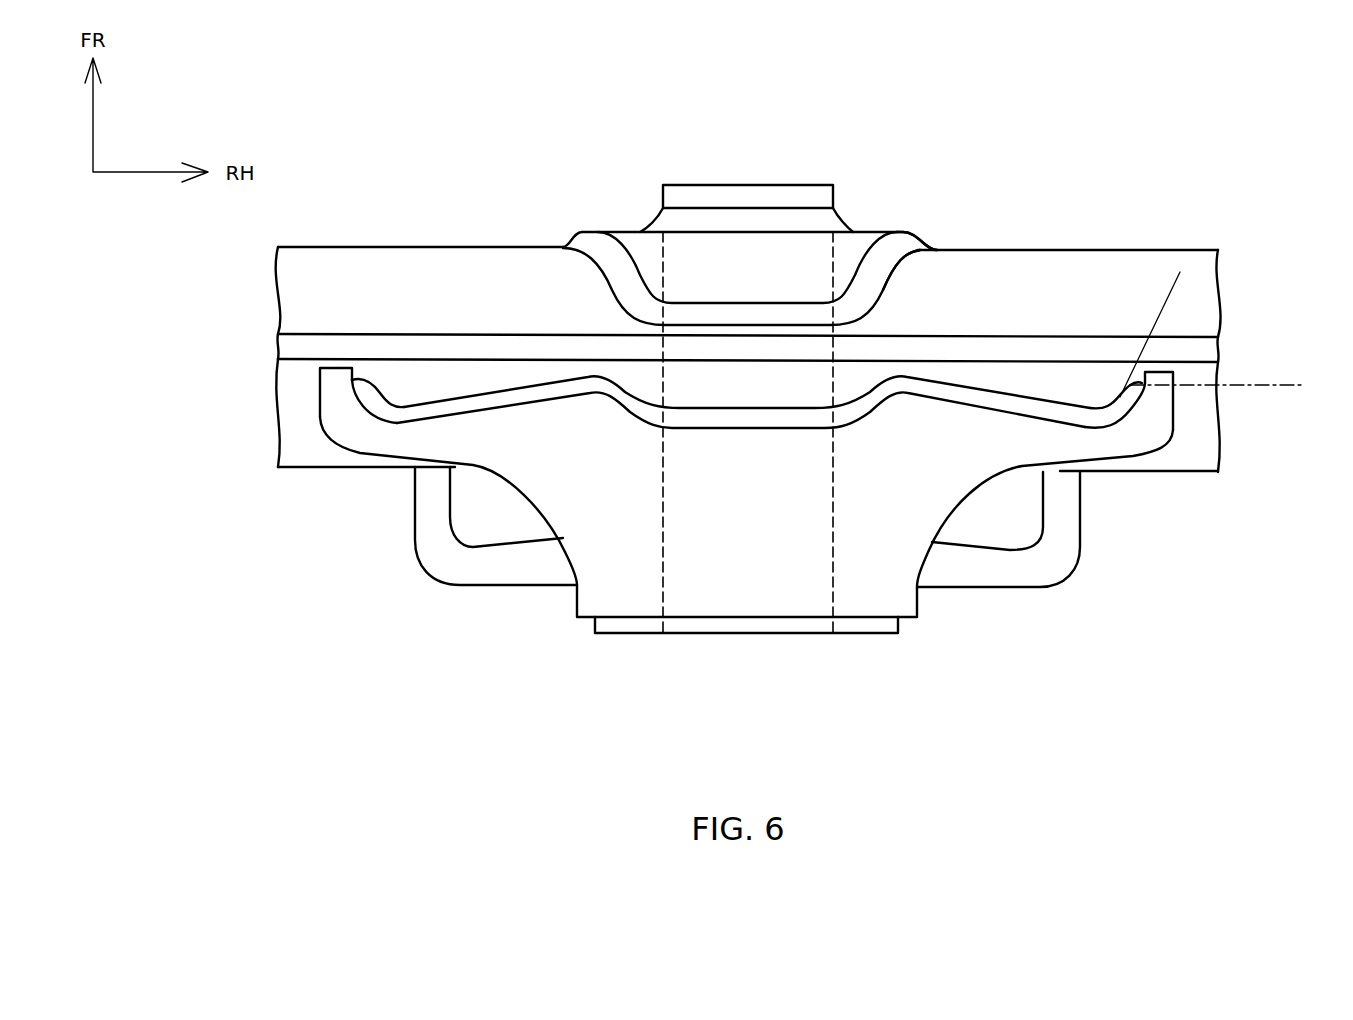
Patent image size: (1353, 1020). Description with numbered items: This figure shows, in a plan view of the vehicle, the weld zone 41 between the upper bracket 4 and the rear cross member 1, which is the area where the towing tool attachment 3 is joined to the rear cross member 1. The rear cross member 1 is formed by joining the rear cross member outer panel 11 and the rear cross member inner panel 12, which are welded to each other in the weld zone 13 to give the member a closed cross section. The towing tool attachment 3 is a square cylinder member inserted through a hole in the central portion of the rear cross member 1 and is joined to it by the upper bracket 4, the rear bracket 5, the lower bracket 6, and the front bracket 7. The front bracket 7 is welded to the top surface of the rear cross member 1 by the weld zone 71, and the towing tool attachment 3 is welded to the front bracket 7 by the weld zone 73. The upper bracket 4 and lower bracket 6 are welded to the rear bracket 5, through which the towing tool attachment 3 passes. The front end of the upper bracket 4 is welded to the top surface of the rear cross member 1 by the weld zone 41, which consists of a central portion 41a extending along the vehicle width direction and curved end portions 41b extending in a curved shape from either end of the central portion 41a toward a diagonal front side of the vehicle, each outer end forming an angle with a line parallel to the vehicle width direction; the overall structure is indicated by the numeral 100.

The rear cross member 1 is at (1192, 228).
The towing tool attachment 3 is at (729, 383).
The upper bracket 4 is at (887, 557).
The rear bracket 5 is at (618, 627).
The lower bracket 6 is at (443, 553).
The front bracket 7 is at (857, 257).
The rear cross member outer panel 11 is at (977, 282).
The rear cross member inner panel 12 is at (1187, 457).
The weld zone 13 is at (1188, 343).
The weld zone 41 is at (746, 259).
The central portion 41a is at (502, 400).
The curved end portions 41b is at (373, 403).
The weld zone 71 is at (903, 248).
The weld zone 73 is at (657, 223).
The mounting structure 100 is at (1085, 663).